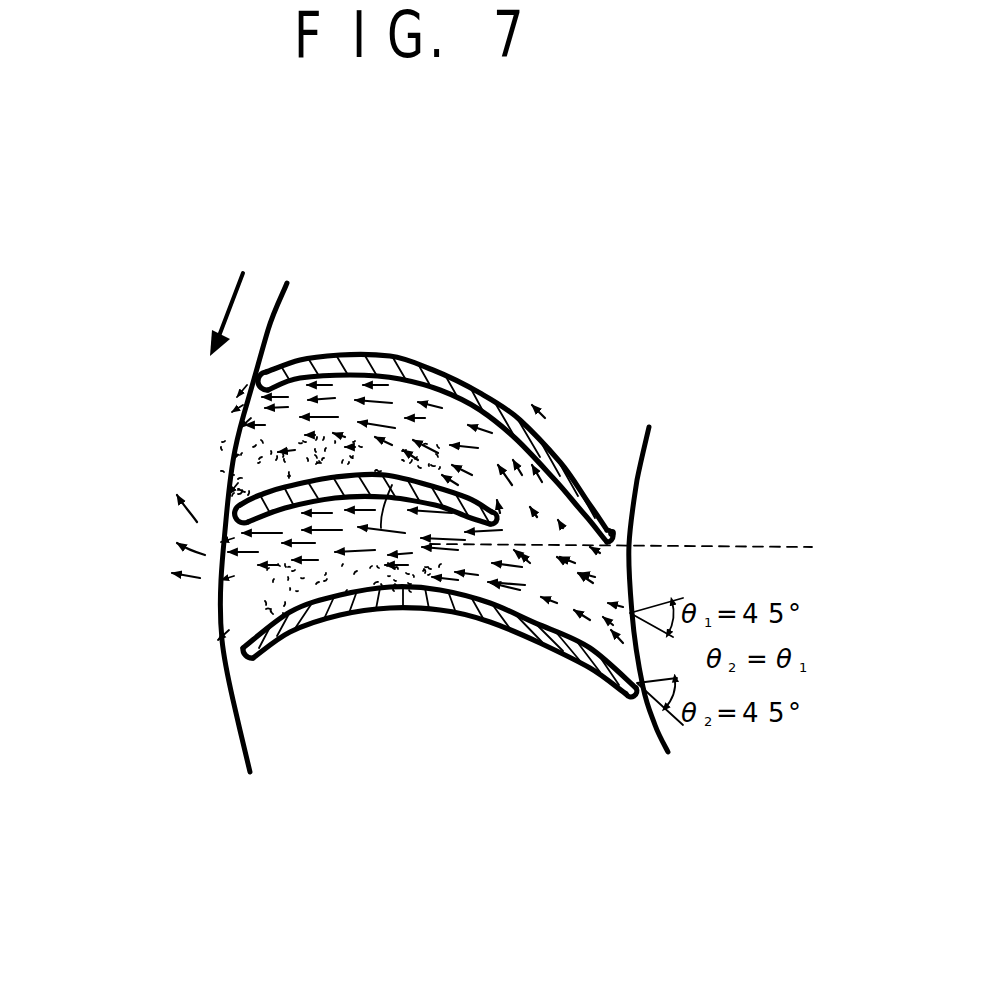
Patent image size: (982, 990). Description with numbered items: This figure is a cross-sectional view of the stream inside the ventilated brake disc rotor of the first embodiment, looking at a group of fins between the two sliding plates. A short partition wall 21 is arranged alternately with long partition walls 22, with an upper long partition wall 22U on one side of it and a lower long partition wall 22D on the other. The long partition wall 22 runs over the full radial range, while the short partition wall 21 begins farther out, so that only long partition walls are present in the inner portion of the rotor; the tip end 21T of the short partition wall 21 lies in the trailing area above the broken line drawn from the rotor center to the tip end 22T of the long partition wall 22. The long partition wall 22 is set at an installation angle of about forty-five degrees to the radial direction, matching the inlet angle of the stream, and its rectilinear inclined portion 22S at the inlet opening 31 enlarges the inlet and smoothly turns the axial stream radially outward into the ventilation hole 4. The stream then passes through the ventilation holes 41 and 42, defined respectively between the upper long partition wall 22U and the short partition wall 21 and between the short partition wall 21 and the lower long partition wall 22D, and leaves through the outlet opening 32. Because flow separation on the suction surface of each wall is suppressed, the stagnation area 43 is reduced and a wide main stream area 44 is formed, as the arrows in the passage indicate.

The ventilation hole 4 is at (400, 472).
The short partition wall 21 is at (337, 459).
The tip end of the short partition wall 21T is at (606, 528).
The long partition wall 22 is at (383, 348).
The upper long partition wall 22U is at (492, 415).
The rectilinear inclined portion 22S is at (572, 518).
The tip end of the long partition wall 22T is at (607, 537).
The lower long partition wall 22D is at (510, 625).
The inlet opening 31 is at (607, 573).
The outlet opening 32 is at (225, 455).
The ventilation hole between upper long partition wall and short partition wall 41 is at (433, 427).
The ventilation hole between short partition wall and lower long partition wall 42 is at (413, 537).
The stagnation area 43 is at (237, 487).
The main stream area 44 is at (535, 513).